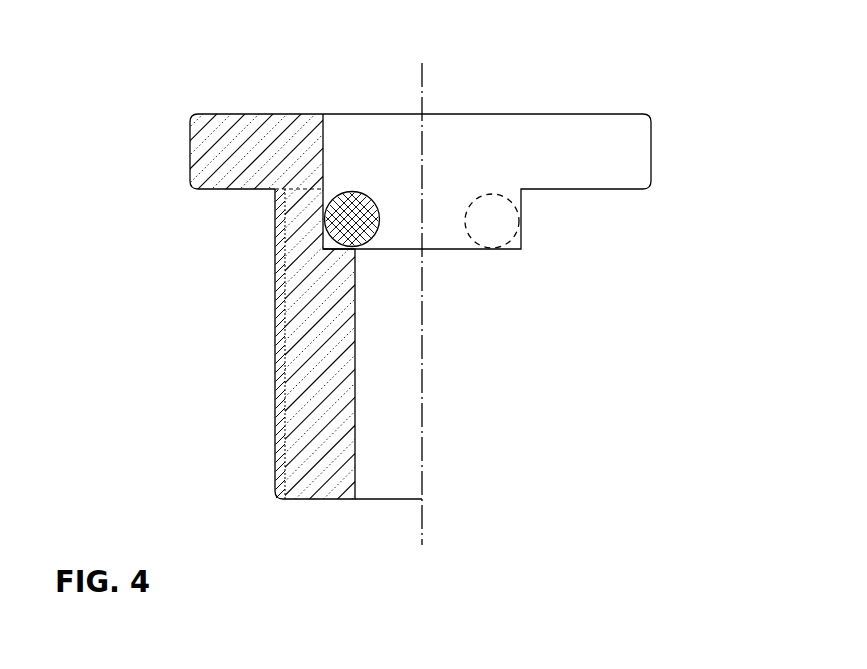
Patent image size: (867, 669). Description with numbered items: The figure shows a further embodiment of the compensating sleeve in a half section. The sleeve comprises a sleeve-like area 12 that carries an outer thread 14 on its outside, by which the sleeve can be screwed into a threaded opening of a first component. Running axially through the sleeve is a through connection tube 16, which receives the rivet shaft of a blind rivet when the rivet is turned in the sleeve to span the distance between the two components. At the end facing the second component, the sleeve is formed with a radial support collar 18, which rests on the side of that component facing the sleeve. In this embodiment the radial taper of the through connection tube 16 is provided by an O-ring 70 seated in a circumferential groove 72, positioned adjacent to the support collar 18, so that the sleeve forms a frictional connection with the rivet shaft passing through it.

The sleeve-like area 12 is at (305, 430).
The outer thread 14 is at (285, 350).
The through connection tube 16 is at (380, 455).
The support collar 18 is at (622, 136).
The O-ring 70 is at (492, 218).
The circumferential groove 72 is at (328, 228).